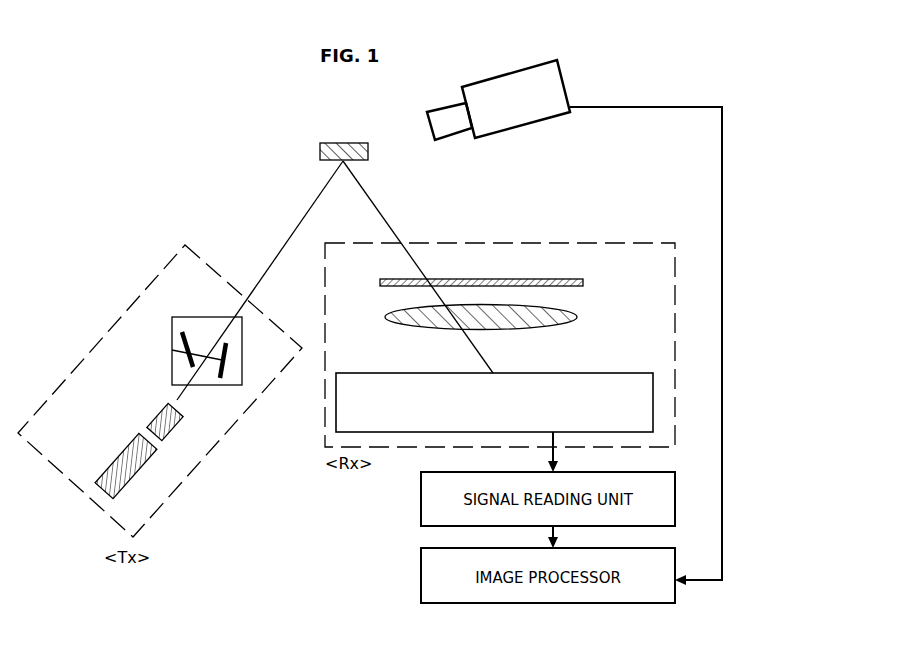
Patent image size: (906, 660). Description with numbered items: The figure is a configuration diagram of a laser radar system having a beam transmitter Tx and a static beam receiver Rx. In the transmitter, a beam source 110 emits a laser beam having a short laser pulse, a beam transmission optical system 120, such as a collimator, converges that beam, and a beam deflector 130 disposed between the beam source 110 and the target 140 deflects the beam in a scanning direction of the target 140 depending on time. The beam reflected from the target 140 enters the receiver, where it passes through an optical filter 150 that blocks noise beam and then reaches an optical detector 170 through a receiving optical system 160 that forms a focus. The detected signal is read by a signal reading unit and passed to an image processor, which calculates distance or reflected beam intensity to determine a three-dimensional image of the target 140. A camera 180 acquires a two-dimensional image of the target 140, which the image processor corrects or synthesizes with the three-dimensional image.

The beam source 110 is at (120, 455).
The beam transmission optical system 120 is at (153, 412).
The beam deflector 130 is at (172, 350).
The target 140 is at (343, 142).
The optical filter 150 is at (567, 273).
The receiving optical system 160 is at (575, 312).
The optical detector 170 is at (618, 373).
The camera 180 is at (563, 75).